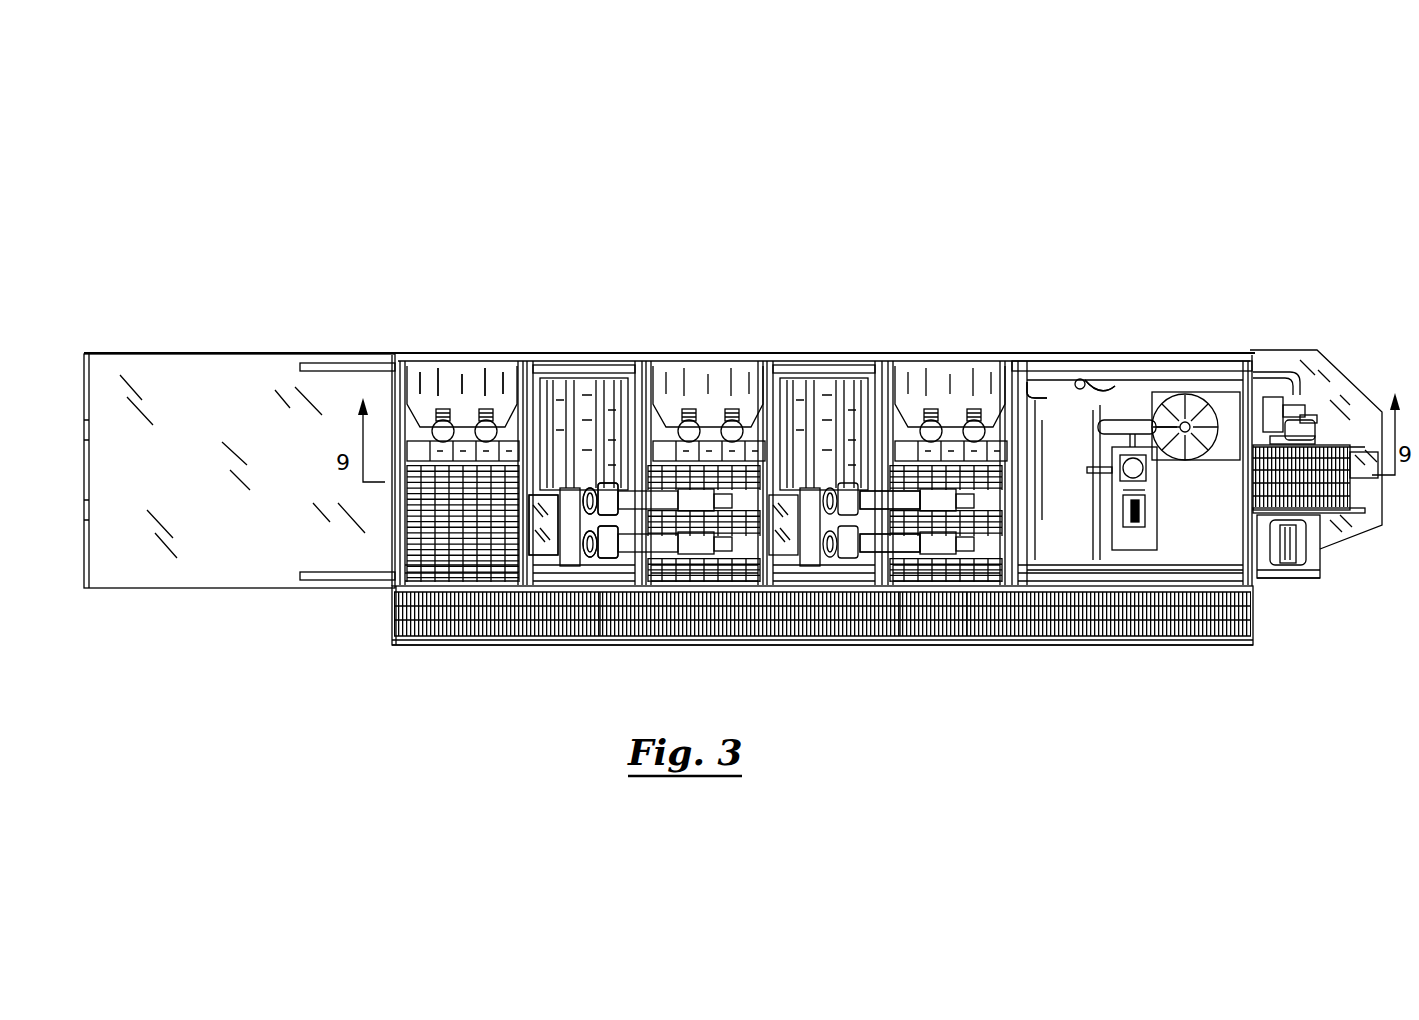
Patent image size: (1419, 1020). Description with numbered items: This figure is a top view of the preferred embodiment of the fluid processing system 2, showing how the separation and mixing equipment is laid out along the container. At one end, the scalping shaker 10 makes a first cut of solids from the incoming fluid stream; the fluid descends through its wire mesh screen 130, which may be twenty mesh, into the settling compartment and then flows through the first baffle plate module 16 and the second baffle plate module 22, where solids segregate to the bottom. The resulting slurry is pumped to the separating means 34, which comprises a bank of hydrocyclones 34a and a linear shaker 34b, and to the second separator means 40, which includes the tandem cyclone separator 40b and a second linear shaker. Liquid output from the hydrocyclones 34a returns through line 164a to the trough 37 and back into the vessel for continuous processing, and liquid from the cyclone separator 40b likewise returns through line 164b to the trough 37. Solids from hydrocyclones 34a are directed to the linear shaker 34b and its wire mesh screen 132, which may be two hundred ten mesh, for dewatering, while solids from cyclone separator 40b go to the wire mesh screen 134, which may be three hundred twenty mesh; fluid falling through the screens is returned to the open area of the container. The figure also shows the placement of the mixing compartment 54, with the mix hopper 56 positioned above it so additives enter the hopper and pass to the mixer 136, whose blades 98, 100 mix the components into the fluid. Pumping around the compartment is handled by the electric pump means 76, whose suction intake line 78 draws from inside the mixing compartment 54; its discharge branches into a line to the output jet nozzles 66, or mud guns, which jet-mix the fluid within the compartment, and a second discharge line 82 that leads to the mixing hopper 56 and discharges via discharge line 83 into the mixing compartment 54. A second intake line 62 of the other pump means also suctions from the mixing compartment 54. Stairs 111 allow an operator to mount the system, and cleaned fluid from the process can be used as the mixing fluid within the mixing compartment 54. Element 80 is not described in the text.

The system 2 is at (1078, 215).
The scalping shaker 10 is at (463, 380).
The first baffle plate module 16 is at (605, 475).
The second baffle plate module 22 is at (836, 470).
The separating means 34 is at (722, 340).
The hydrocyclones 34a is at (612, 478).
The linear shaker 34b is at (748, 372).
The trough 37 is at (560, 637).
The second separator means 40 is at (960, 345).
The tandem cyclone separator 40b is at (870, 475).
The mixing compartment 54 is at (1245, 545).
The mix hopper 56 is at (1205, 390).
The second intake line 62 is at (1043, 388).
The output jet nozzles 66 is at (1113, 385).
The electric pump means 76 is at (1325, 428).
The suction intake line 78 is at (1257, 355).
The pipe 80 is at (1280, 365).
The second discharge line 82 is at (1318, 425).
The discharge line 83 is at (1152, 395).
The mixing propeller 98 is at (1175, 478).
The mixing propeller 100 is at (1110, 468).
The stairs 111 is at (1345, 512).
The wire mesh screen 130 is at (405, 545).
The wire mesh screen 132 is at (733, 640).
The wire mesh screen 134 is at (953, 640).
The mixer 136 is at (1195, 636).
The line 164a is at (566, 493).
The line 164b is at (806, 490).